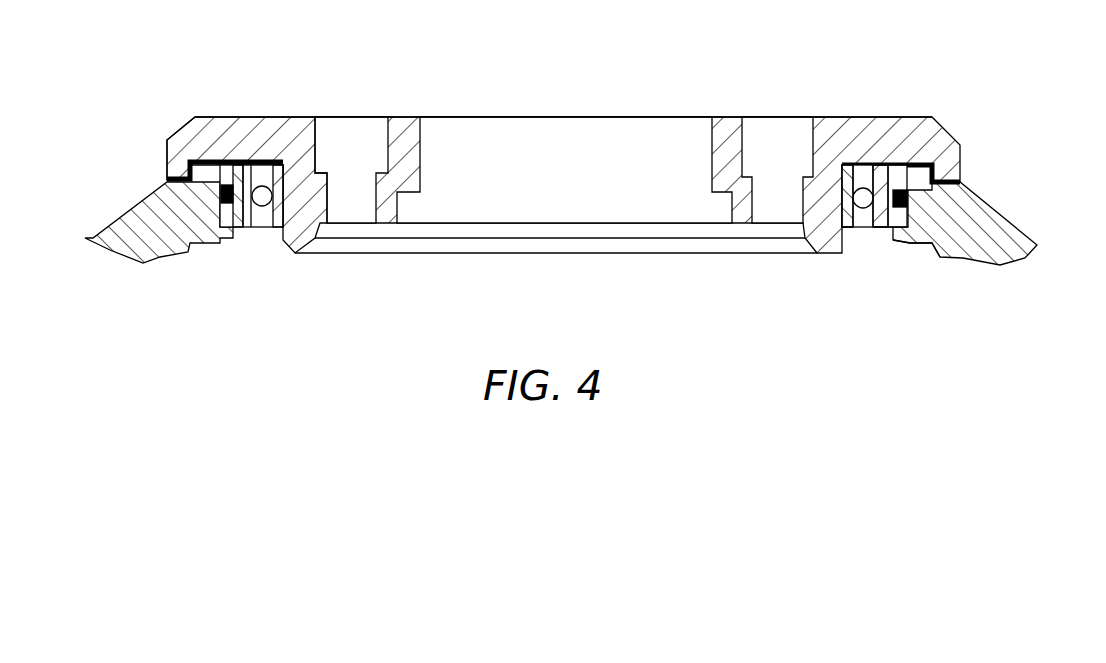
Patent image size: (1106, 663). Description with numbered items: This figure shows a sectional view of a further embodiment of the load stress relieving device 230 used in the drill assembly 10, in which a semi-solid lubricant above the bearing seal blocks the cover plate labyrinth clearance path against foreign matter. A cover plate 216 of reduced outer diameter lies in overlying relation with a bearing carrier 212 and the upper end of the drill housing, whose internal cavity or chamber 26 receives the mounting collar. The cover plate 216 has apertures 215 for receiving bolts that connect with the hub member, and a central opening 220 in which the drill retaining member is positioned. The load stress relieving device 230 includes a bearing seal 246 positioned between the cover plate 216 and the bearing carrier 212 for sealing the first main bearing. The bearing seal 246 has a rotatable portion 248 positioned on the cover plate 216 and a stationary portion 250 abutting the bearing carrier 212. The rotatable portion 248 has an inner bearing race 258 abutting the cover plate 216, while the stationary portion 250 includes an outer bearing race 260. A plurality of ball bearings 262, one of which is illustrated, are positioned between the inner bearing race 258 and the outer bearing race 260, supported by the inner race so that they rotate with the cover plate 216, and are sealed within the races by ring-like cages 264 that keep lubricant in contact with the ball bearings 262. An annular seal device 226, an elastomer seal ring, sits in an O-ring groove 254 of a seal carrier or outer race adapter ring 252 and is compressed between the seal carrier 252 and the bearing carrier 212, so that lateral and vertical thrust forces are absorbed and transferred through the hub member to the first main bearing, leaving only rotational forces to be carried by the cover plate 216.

The assembly 10 is at (196, 104).
The internal cavity or chamber 26 is at (920, 248).
The bearing carrier 212 is at (152, 203).
The apertures 215 is at (315, 137).
The cover plate 216 is at (182, 132).
The central opening 220 is at (422, 137).
The annular seal device 226 is at (907, 198).
The load stress relieving device 230 is at (262, 232).
The bearing seal 246 is at (888, 230).
The rotatable portion 248 is at (853, 233).
The stationary portion 250 is at (877, 165).
The seal carrier or outer race adapter ring 252 is at (900, 165).
The O-ring groove 254 is at (900, 215).
The inner bearing race 258 is at (853, 165).
The outer bearing race 260 is at (878, 232).
The ball bearings 262 is at (855, 190).
The ring-like cages 264 is at (865, 165).